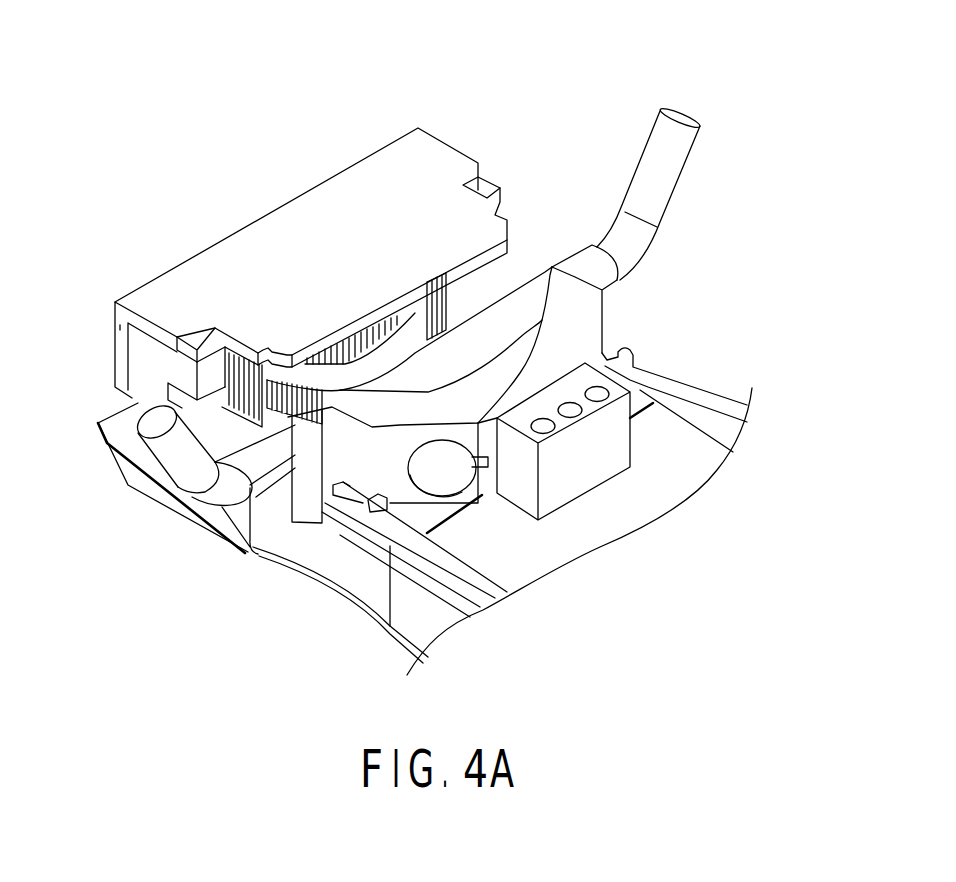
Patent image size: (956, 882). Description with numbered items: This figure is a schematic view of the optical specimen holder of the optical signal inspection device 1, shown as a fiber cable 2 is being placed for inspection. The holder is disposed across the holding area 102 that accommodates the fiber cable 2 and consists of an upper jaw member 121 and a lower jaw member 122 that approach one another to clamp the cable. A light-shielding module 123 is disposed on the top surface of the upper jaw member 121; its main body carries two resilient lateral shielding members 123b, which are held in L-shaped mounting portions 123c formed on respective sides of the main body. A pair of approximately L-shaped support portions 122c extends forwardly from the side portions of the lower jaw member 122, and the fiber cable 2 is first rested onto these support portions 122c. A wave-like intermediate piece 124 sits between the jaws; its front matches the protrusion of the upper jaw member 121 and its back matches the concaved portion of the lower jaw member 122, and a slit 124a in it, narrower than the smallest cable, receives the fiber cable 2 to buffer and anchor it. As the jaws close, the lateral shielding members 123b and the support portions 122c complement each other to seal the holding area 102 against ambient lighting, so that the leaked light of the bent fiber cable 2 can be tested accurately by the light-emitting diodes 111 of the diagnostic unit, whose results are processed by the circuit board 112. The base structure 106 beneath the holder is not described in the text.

The optical signal inspection device 1 is at (155, 26).
The fiber cable 2 is at (650, 178).
The holding area 102 is at (490, 302).
The base plate 106 is at (360, 583).
The light-emitting diodes 111 is at (448, 470).
The circuit board 112 is at (693, 448).
The upper jaw member 121 is at (352, 350).
The lower jaw member 122 is at (580, 317).
The support portions 122c is at (577, 278).
The light-shielding module 123 is at (172, 302).
The lateral shielding members 123b is at (487, 190).
The mounting portions 123c is at (125, 332).
The intermediate piece 124 is at (437, 310).
The slit 124a is at (310, 370).